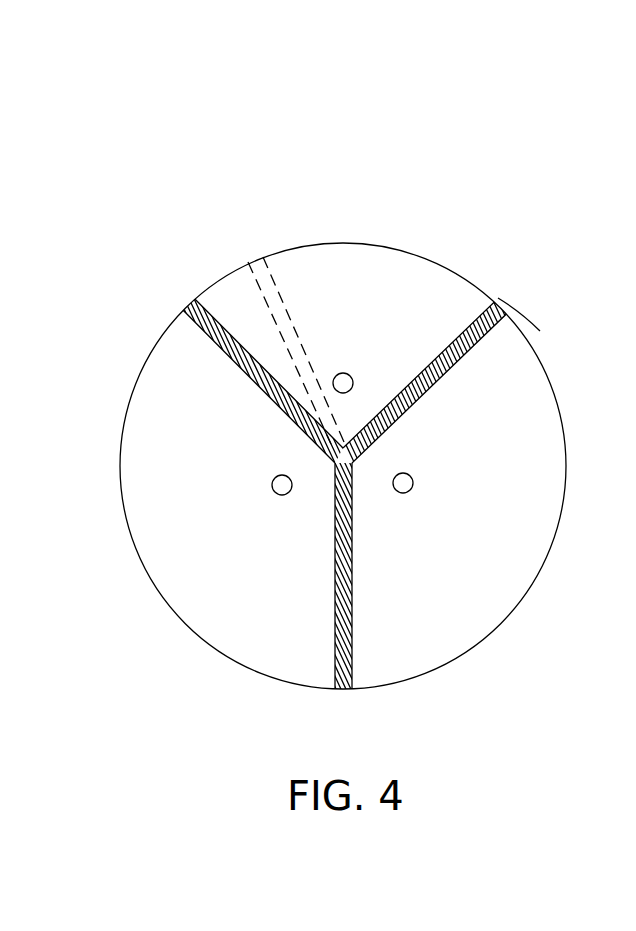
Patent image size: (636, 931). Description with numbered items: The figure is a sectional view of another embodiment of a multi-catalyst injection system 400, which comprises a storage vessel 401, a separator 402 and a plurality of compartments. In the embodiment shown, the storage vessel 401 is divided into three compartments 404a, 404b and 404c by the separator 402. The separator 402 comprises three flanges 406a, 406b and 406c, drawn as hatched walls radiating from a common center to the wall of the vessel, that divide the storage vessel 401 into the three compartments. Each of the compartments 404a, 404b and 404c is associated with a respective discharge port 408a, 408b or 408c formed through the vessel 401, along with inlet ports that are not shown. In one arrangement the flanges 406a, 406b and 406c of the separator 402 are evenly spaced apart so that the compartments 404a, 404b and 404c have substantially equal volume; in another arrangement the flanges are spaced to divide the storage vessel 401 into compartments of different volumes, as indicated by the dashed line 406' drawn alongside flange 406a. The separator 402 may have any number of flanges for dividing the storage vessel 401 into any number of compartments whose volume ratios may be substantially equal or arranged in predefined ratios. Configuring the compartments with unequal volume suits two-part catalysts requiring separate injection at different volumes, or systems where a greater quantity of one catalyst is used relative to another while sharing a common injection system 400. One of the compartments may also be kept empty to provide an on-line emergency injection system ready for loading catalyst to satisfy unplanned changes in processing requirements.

The multi-catalyst injection system 400 is at (356, 146).
The storage vessel 401 is at (404, 252).
The separator 402 is at (500, 306).
The compartment 404a is at (440, 313).
The compartment 404b is at (235, 493).
The compartment 404c is at (520, 517).
The flange 406a is at (208, 313).
The flange 406b is at (340, 645).
The flange 406c is at (466, 355).
The dashed line 406' is at (305, 350).
The discharge port 408a is at (349, 376).
The discharge port 408b is at (286, 488).
The discharge port 408c is at (399, 486).